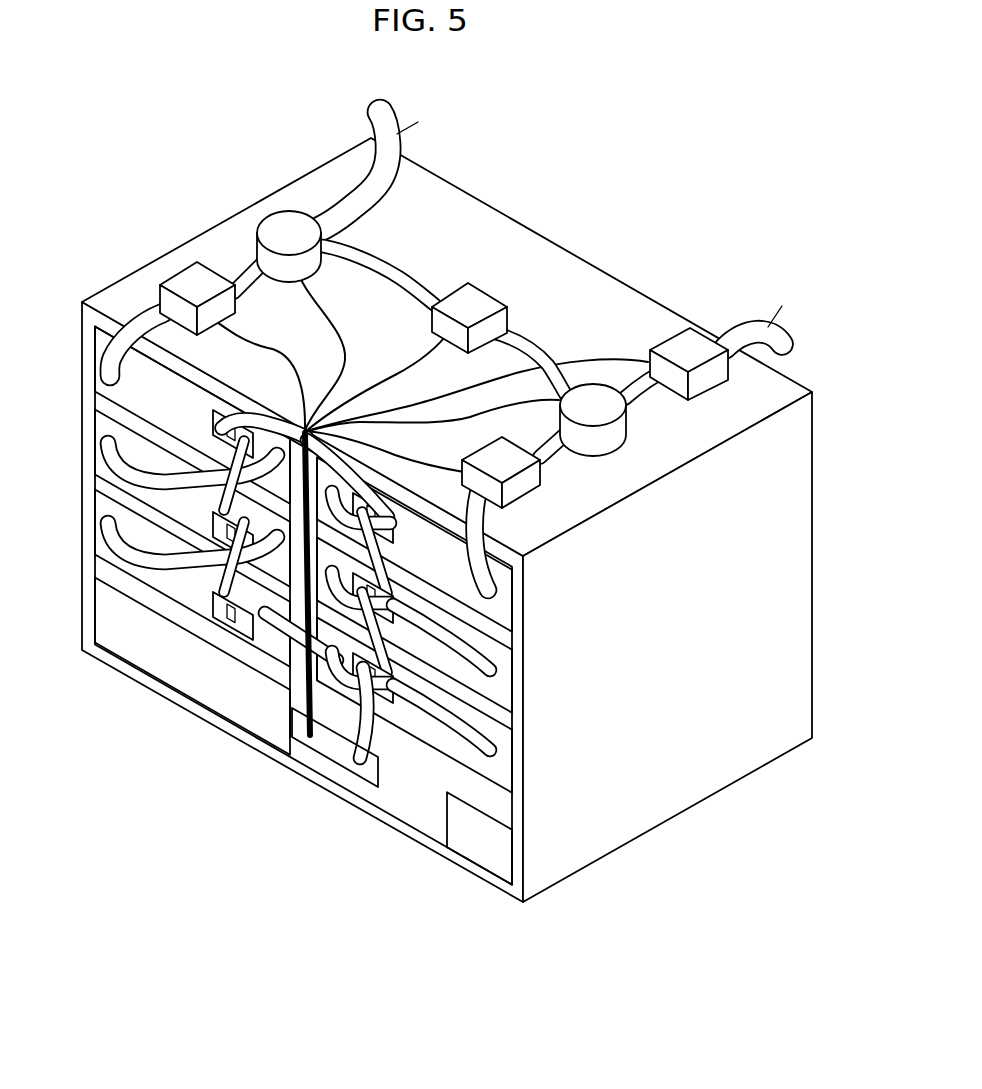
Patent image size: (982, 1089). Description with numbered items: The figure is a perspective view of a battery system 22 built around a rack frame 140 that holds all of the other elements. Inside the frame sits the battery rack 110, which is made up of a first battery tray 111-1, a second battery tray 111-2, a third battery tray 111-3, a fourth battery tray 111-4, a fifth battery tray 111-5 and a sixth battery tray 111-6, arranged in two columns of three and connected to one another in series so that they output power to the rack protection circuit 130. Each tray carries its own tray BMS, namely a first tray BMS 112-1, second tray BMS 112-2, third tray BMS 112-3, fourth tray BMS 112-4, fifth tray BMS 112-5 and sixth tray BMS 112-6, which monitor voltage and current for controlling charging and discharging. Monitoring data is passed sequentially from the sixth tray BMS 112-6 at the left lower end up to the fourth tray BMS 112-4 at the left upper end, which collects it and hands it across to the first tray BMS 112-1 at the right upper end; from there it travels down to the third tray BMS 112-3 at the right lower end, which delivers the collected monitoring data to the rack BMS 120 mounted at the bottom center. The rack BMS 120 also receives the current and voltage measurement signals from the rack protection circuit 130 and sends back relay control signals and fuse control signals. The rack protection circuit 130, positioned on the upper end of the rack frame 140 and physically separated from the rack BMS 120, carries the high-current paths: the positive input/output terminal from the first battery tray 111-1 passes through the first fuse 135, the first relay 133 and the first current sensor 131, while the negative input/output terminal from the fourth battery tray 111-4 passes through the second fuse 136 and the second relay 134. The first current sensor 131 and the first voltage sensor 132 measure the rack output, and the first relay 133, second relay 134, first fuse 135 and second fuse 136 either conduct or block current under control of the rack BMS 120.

The battery system 22 is at (752, 152).
The battery rack 110 is at (363, 519).
The first battery tray 111-1 is at (523, 598).
The second battery tray 111-2 is at (523, 693).
The third battery tray 111-3 is at (635, 640).
The fourth battery tray 111-4 is at (92, 412).
The fifth battery tray 111-5 is at (97, 510).
The sixth battery tray 111-6 is at (97, 585).
The first tray BMS 112-1 is at (393, 545).
The second tray BMS 112-2 is at (375, 560).
The third tray BMS 112-3 is at (360, 570).
The fourth tray BMS 112-4 is at (213, 435).
The fifth tray BMS 112-5 is at (213, 512).
The sixth tray BMS 112-6 is at (233, 612).
The rack BMS 120 is at (320, 753).
The rack protection circuit 130 is at (458, 349).
The first current sensor 131 is at (712, 390).
The first voltage sensor 132 is at (488, 300).
The first relay 133 is at (613, 455).
The second relay 134 is at (291, 212).
The first fuse 135 is at (532, 497).
The second fuse 136 is at (212, 273).
The rack frame 140 is at (353, 797).